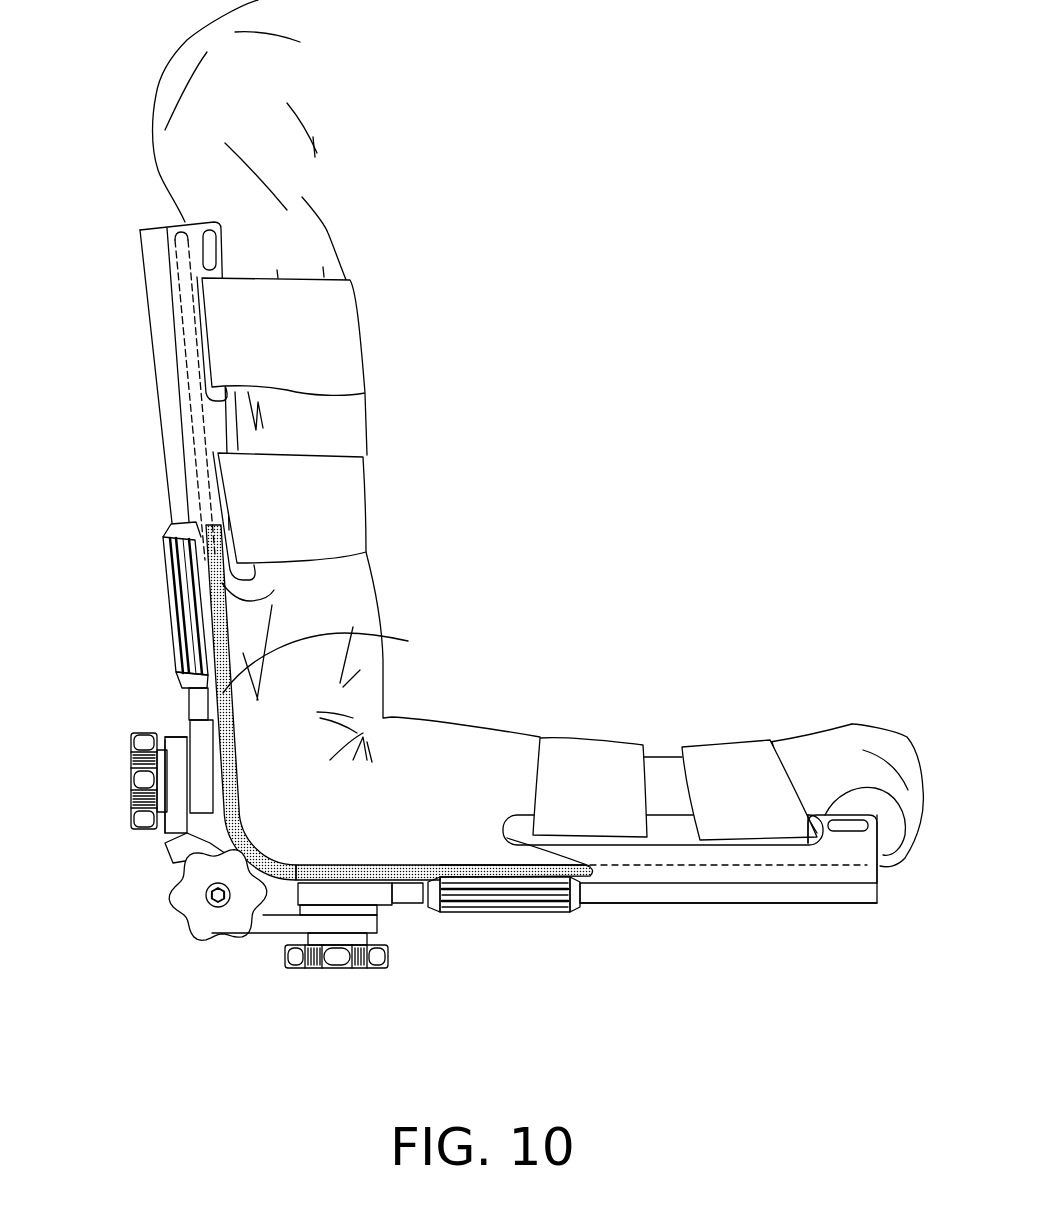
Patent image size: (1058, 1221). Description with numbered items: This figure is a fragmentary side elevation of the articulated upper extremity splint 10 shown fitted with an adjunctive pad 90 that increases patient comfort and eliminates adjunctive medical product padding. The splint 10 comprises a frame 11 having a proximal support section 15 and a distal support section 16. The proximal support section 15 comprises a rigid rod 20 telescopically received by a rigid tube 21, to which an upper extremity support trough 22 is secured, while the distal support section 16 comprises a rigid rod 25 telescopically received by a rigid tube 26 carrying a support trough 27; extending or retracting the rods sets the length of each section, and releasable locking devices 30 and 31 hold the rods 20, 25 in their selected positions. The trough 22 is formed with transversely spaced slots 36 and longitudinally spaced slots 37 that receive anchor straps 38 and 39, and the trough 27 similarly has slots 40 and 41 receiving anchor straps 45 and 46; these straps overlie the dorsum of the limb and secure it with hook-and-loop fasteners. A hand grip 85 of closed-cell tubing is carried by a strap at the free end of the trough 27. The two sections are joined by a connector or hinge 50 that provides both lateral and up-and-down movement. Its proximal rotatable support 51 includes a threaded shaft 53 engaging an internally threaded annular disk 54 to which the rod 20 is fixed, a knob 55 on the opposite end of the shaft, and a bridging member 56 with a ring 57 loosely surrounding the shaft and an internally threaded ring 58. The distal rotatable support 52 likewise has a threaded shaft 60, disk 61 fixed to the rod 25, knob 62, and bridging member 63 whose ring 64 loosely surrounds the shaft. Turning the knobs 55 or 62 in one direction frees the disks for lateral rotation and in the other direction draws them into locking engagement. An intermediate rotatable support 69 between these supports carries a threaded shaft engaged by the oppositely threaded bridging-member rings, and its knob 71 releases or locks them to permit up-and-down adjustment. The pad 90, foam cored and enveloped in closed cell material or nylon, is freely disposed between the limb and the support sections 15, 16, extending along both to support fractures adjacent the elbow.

The articulated upper extremity splint 10 is at (447, 268).
The frame 11 is at (133, 382).
The proximal support section 15 is at (160, 435).
The distal support section 16 is at (745, 908).
The rigid rod 20 is at (192, 707).
The rigid tube 21 is at (152, 267).
The upper extremity support trough 22 is at (192, 226).
The rigid rod 25 is at (402, 893).
The rigid tube 26 is at (810, 898).
The upper extremity support trough 27 is at (858, 855).
The releasable locking device 30 is at (170, 592).
The releasable locking device 31 is at (507, 910).
The slots 36 is at (203, 338).
The slots 37 is at (220, 508).
The anchor strap 38 is at (348, 345).
The anchor strap 39 is at (360, 510).
The slots 40 is at (822, 835).
The slots 41 is at (672, 837).
The anchor strap 45 is at (707, 780).
The anchor strap 46 is at (583, 760).
The connector or hinge 50 is at (163, 890).
The proximal support section rotatable support 51 is at (128, 767).
The distal support section rotatable support 52 is at (343, 973).
The threaded shaft 53 is at (227, 777).
The internally threaded annular disk 54 is at (212, 800).
The knob 55 is at (163, 840).
The bridging member 56 is at (182, 847).
The ring 57 is at (177, 733).
The ring 58 is at (197, 928).
The threaded shaft 60 is at (363, 883).
The internally threaded annular disk 61 is at (420, 877).
The knob 62 is at (288, 957).
The bridging member 63 is at (257, 933).
The ring 64 is at (378, 922).
The intermediate rotatable support 69 is at (170, 923).
The knob 71 is at (238, 826).
The hand grip 85 is at (883, 852).
The adjunctive pad 90 is at (332, 659).